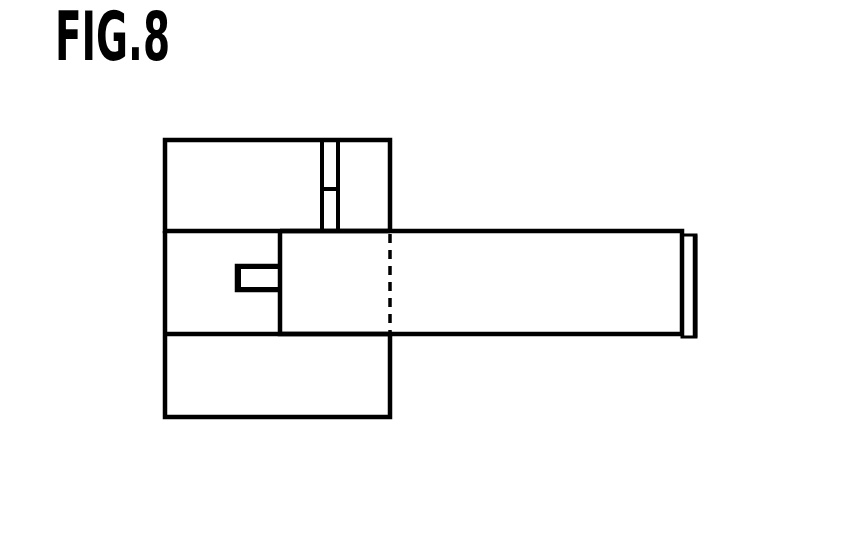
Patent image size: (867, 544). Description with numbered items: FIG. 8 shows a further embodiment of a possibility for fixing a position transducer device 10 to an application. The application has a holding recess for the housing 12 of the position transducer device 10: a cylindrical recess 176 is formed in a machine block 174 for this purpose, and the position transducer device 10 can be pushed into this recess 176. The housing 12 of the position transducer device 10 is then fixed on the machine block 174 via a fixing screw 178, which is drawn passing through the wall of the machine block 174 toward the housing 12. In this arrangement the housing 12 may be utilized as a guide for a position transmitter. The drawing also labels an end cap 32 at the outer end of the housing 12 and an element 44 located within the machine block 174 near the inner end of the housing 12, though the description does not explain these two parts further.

The position transducer device 10 is at (574, 325).
The housing 12 is at (503, 232).
The end cap 32 is at (697, 307).
The connector element 44 is at (247, 278).
The machine block 174 is at (364, 400).
The cylindrical recess 176 is at (205, 232).
The fixing screw 178 is at (331, 205).